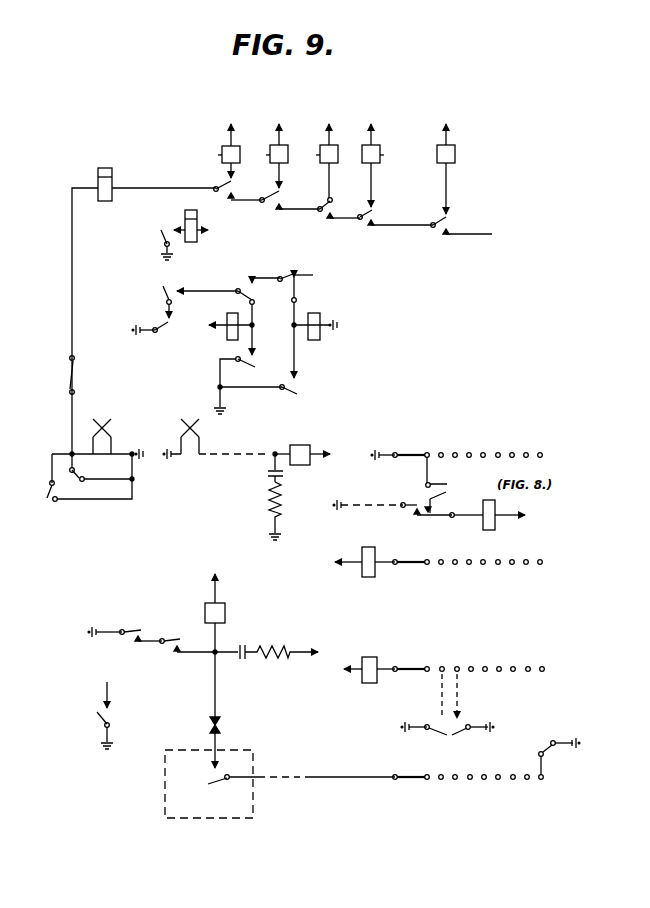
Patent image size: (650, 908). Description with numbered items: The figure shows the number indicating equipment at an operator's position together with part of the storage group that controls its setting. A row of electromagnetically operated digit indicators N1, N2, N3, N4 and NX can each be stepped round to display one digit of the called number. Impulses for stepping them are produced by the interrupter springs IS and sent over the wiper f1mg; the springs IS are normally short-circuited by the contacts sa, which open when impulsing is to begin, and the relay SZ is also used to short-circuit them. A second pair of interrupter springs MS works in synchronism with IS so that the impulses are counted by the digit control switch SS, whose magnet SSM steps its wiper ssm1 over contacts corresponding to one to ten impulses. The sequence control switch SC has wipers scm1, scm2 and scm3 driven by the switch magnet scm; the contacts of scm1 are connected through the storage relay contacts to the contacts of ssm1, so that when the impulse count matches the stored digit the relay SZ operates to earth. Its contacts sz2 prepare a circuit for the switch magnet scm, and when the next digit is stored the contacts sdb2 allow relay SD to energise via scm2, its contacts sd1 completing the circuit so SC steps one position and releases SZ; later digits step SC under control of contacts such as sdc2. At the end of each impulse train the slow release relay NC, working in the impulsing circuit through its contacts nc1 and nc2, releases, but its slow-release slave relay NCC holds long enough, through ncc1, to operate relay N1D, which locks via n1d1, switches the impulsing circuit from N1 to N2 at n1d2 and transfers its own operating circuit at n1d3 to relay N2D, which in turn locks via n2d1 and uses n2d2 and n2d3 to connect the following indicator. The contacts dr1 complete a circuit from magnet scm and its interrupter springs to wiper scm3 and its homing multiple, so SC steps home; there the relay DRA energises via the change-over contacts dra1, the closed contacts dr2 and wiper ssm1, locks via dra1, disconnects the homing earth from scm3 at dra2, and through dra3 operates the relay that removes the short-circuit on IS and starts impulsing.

The slow release relay NC is at (108, 175).
The digit indicator N1 is at (219, 143).
The digit indicator N2 is at (267, 143).
The digit indicator N3 is at (317, 143).
The digit indicator N4 is at (385, 143).
The digit indicator NX is at (460, 143).
The contacts of relay N1D n1d2 is at (237, 191).
The contacts of relay N2D n2d2 is at (290, 198).
The slow-release slave relay NCC is at (192, 235).
The contacts of relay NC nc1 is at (151, 244).
The contacts of relay NCC ncc1 is at (181, 301).
The contacts of relay NC nc2 is at (158, 334).
The contacts of relay N1D n1d3 is at (253, 285).
The contacts of relay N2D n2d3 is at (318, 282).
The relay N1D is at (231, 326).
The relay N2D is at (315, 337).
The locking contacts of relay N1D n1d1 is at (255, 384).
The locking contacts of relay N2D n2d1 is at (281, 394).
The wiper f1mg is at (95, 375).
The interrupter springs IS is at (113, 436).
The relay SZ is at (208, 526).
The contacts sa is at (101, 468).
The interrupter springs MS is at (197, 439).
The switch magnet SSM is at (301, 446).
The digit control switch SS is at (383, 448).
The wiper ssm1 is at (469, 447).
The contacts dr2 is at (451, 485).
The change-over contacts of relay DRA dra1 is at (392, 517).
The relay DRA is at (492, 515).
The wiper scm1 is at (458, 554).
The switch magnet scm is at (229, 645).
The contacts of relay SD sd1 is at (125, 628).
The contacts of relay SZ sz2 is at (199, 638).
The contacts of relay DRA dra3 is at (125, 715).
The contacts dr1 is at (215, 784).
The relay SD is at (370, 661).
The sequence control switch SC is at (413, 628).
The wiper scm2 is at (470, 684).
The contacts of relay SDB sdb2 is at (420, 741).
The contacts of relay SDC sdc2 is at (479, 721).
The contacts of relay DRA dra2 is at (557, 750).
The wiper scm3 is at (424, 769).